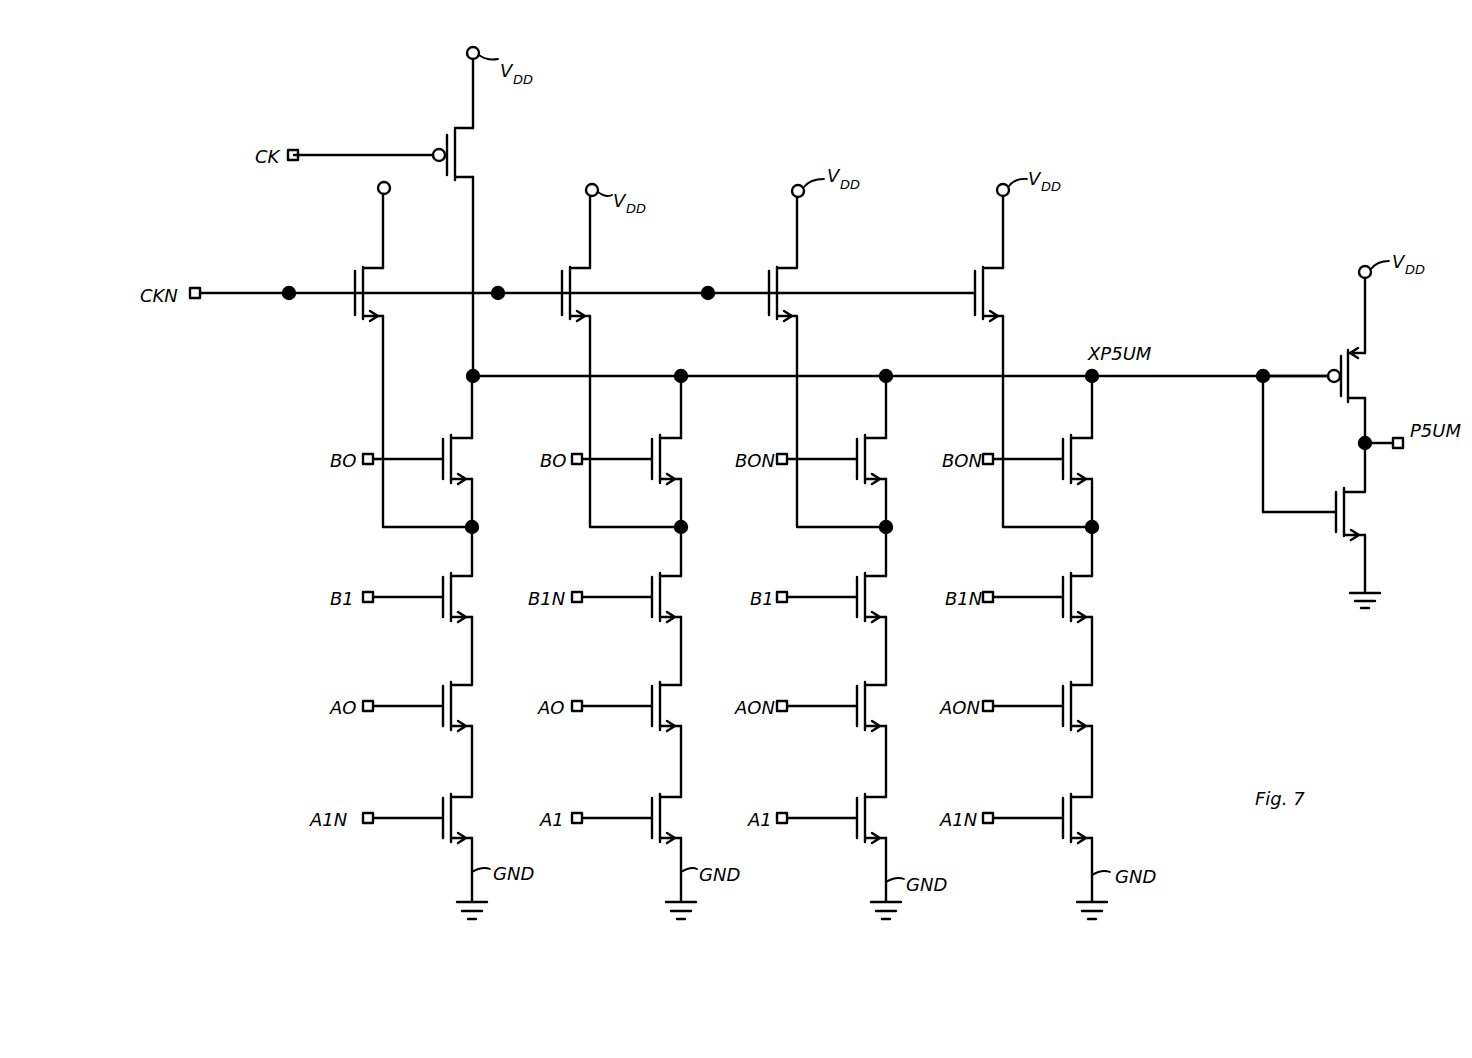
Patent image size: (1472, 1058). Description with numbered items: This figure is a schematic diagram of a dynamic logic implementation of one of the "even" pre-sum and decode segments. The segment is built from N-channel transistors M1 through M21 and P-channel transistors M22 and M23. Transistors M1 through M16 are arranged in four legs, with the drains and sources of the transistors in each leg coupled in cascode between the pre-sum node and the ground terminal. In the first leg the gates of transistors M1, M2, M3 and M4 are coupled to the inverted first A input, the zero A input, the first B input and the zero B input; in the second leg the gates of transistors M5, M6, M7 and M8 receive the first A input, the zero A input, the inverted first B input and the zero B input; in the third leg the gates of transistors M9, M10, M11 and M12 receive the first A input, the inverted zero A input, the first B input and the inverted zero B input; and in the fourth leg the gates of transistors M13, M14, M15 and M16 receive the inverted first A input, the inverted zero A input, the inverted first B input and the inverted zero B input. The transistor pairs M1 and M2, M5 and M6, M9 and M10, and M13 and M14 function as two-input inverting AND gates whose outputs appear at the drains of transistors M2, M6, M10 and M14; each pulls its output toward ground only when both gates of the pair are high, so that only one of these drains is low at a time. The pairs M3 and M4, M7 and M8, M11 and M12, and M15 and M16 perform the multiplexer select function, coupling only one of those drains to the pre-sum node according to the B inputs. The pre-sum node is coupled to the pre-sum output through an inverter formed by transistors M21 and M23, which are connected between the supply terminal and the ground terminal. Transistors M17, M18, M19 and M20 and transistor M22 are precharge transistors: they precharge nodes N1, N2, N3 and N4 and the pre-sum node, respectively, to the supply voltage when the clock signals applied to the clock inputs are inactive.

The N-channel transistor M1 is at (427, 818).
The N-channel transistor M2 is at (427, 706).
The N-channel transistor M3 is at (427, 597).
The N-channel transistor M4 is at (427, 459).
The N-channel transistor M5 is at (636, 818).
The N-channel transistor M6 is at (636, 706).
The N-channel transistor M7 is at (637, 597).
The N-channel transistor M8 is at (636, 459).
The N-channel transistor M9 is at (841, 818).
The N-channel transistor M10 is at (847, 706).
The N-channel transistor M11 is at (847, 597).
The N-channel transistor M12 is at (847, 459).
The N-channel transistor M13 is at (1053, 818).
The N-channel transistor M14 is at (1053, 706).
The N-channel transistor M15 is at (1053, 597).
The N-channel transistor M16 is at (1053, 459).
The precharge transistor M17 is at (390, 294).
The precharge transistor M18 is at (597, 294).
The precharge transistor M19 is at (804, 294).
The precharge transistor M20 is at (1010, 294).
The N-channel transistor M21 is at (1334, 514).
The precharge transistor M22 is at (402, 154).
The P-channel transistor M23 is at (1338, 375).
The node N1 is at (485, 528).
The node N2 is at (694, 528).
The node N3 is at (899, 528).
The node N4 is at (1105, 528).